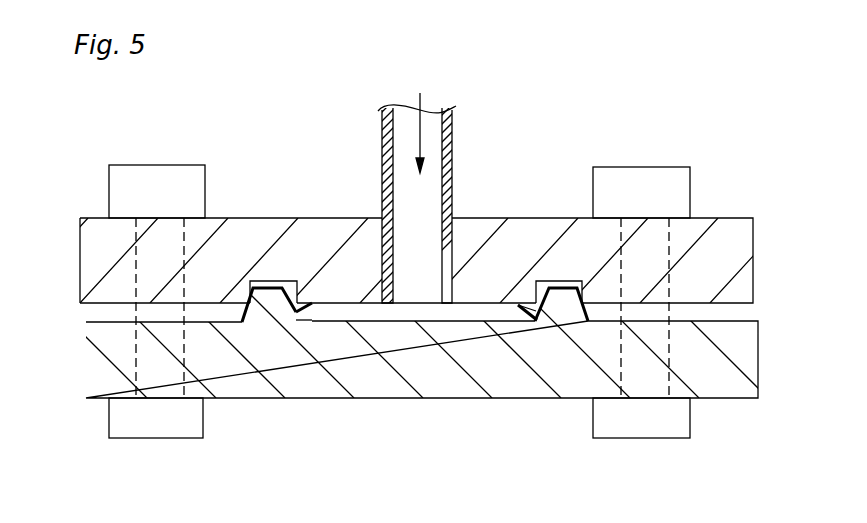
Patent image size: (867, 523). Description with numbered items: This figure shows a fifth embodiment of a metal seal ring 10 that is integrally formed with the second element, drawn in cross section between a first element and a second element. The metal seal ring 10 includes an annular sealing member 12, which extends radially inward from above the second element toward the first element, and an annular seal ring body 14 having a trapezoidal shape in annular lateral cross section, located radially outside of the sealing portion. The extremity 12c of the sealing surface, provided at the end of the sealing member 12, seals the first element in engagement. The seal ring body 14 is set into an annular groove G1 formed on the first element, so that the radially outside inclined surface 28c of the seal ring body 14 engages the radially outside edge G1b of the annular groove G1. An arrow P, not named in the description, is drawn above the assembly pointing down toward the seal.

The radially outside inclined surface 28c is at (253, 292).
The extremity of the sealing surface 12c is at (303, 296).
The pressure P is at (417, 171).
The metal seal ring 10 is at (437, 405).
The annular sealing member 12 is at (310, 340).
The annular seal ring body 14 is at (266, 330).
The annular groove G1 is at (288, 290).
The radially outside edge of the annular groove G1b is at (262, 290).